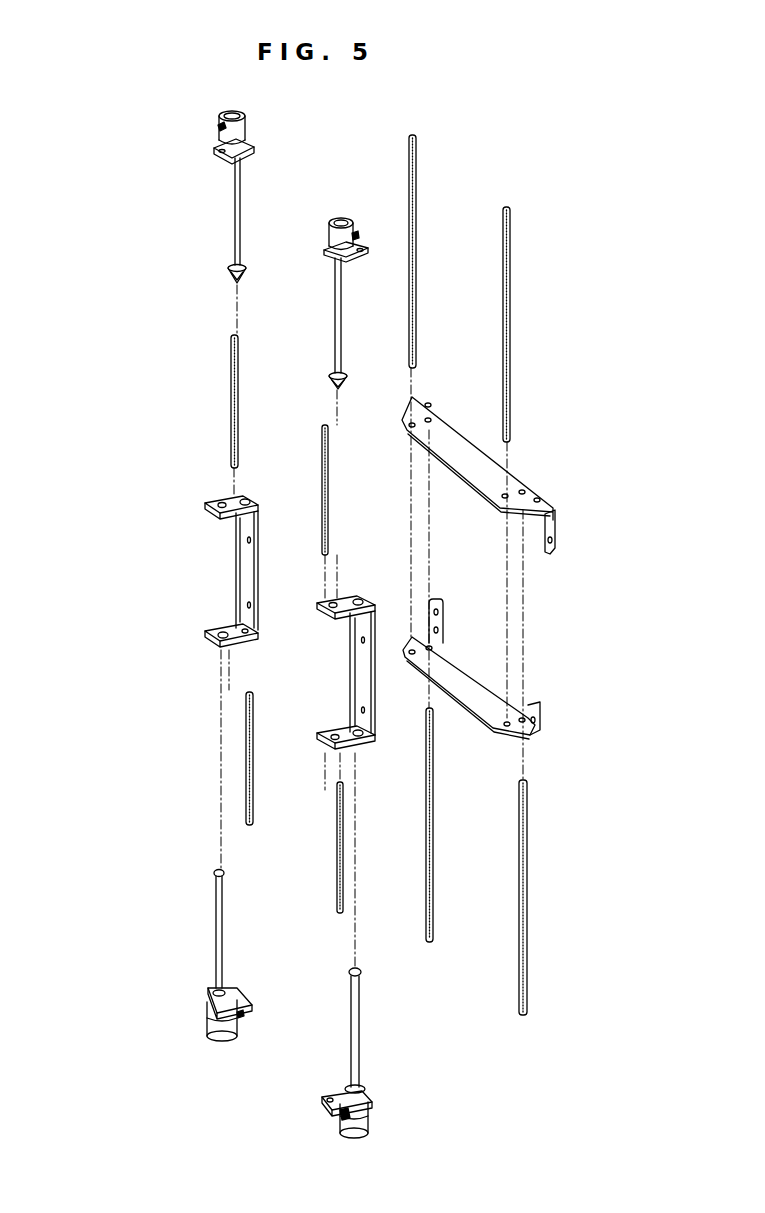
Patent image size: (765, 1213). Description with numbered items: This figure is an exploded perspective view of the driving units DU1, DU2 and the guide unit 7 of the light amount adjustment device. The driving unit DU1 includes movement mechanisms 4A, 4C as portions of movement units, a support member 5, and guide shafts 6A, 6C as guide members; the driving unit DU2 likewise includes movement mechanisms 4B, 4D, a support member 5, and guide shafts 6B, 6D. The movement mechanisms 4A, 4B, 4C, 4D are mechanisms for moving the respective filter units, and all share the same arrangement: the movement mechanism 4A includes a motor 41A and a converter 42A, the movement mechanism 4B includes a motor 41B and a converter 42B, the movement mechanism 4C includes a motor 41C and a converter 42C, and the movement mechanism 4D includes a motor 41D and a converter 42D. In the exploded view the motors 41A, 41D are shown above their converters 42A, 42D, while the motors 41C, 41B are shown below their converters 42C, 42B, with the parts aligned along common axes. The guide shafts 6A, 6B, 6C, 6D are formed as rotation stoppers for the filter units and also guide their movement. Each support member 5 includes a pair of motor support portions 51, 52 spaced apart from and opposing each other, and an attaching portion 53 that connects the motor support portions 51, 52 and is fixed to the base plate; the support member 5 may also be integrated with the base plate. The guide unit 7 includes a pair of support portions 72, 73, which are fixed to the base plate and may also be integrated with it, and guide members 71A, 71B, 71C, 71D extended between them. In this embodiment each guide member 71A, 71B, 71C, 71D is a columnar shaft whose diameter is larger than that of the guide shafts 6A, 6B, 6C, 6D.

The driving unit DU1 is at (165, 1057).
The driving unit DU2 is at (277, 1093).
The movement mechanism 4A is at (285, 160).
The movement mechanism 4B is at (330, 968).
The movement mechanism 4C is at (188, 915).
The movement mechanism 4D is at (312, 250).
The motor 41A is at (226, 114).
The motor 41B is at (375, 1115).
The motor 41C is at (212, 1020).
The motor 41D is at (378, 195).
The converter 42A is at (235, 205).
The converter 42B is at (360, 1040).
The converter 42C is at (217, 955).
The converter 42D is at (337, 312).
The support member 5 is at (190, 498).
The motor support portion 51 is at (205, 507).
The motor support portion 52 is at (205, 645).
The attaching portion 53 is at (243, 580).
The guide shaft 6A is at (246, 740).
The guide shaft 6B is at (340, 875).
The guide shaft 6C is at (232, 392).
The guide shaft 6D is at (323, 452).
The guide unit 7 is at (565, 478).
The guide member 71A is at (526, 860).
The guide member 71B is at (430, 915).
The guide member 71C is at (508, 272).
The guide member 71D is at (413, 150).
The support portion 72 is at (455, 435).
The support portion 73 is at (468, 660).